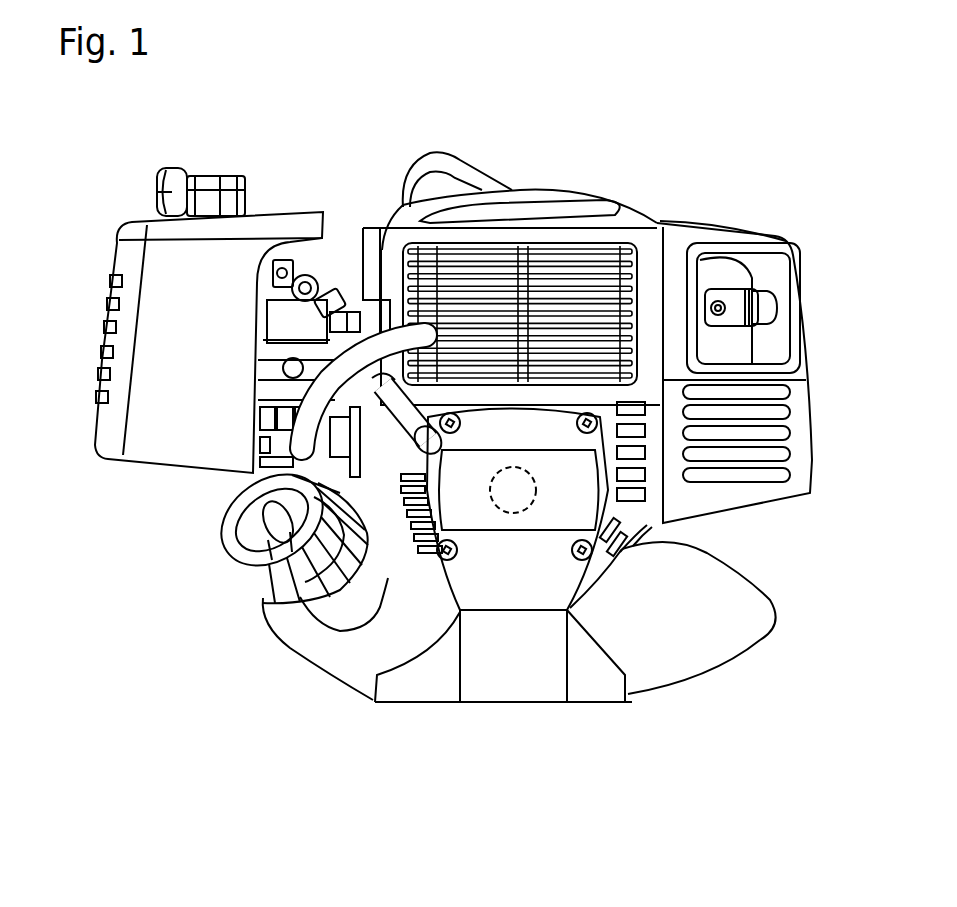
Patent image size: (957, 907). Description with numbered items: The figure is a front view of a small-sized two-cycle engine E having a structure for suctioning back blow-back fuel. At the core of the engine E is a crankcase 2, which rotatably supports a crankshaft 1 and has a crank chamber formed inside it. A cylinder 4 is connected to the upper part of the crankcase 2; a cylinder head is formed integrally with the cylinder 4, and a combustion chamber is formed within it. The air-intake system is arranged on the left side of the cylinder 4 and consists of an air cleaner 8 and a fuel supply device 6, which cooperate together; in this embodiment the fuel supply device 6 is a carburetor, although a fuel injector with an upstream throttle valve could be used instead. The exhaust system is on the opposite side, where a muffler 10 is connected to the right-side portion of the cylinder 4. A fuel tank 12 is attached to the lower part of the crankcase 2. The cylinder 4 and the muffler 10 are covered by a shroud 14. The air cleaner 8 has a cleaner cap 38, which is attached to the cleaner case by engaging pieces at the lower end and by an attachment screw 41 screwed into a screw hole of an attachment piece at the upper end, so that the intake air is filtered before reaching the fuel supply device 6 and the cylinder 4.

The crankshaft 1 is at (510, 512).
The crankcase 2 is at (470, 565).
The cylinder 4 is at (565, 265).
The fuel supply device 6 is at (331, 260).
The air cleaner 8 is at (273, 208).
The muffler 10 is at (740, 263).
The fuel tank 12 is at (742, 600).
The shroud 14 is at (688, 246).
The cleaner cap 38 is at (162, 446).
The attachment screw 41 is at (180, 168).
The two-cycle engine E is at (607, 714).